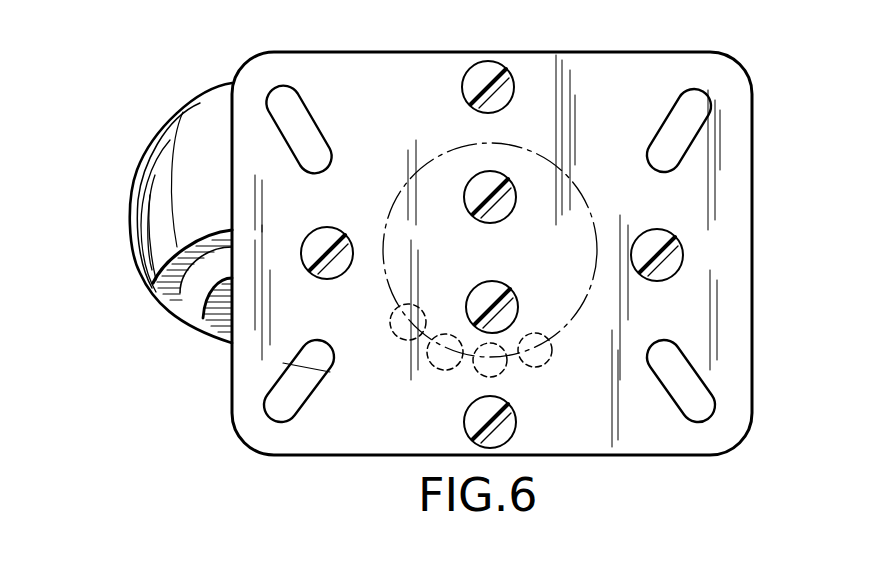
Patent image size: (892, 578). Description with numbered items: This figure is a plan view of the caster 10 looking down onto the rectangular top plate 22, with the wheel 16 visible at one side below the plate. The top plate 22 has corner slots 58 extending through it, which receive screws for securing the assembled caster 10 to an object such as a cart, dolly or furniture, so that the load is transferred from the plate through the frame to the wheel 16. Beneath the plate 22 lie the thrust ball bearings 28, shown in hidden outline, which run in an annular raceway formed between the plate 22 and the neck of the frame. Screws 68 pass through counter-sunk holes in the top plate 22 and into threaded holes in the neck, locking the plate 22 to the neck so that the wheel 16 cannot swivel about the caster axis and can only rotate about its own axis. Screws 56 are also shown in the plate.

The caster 10 is at (128, 355).
The wheel 16 is at (168, 132).
The top plate 22 is at (597, 51).
The thrust ball bearings 28 is at (433, 363).
The screws 56 is at (326, 232).
The corner slots 58 is at (304, 104).
The screws 68 is at (503, 203).